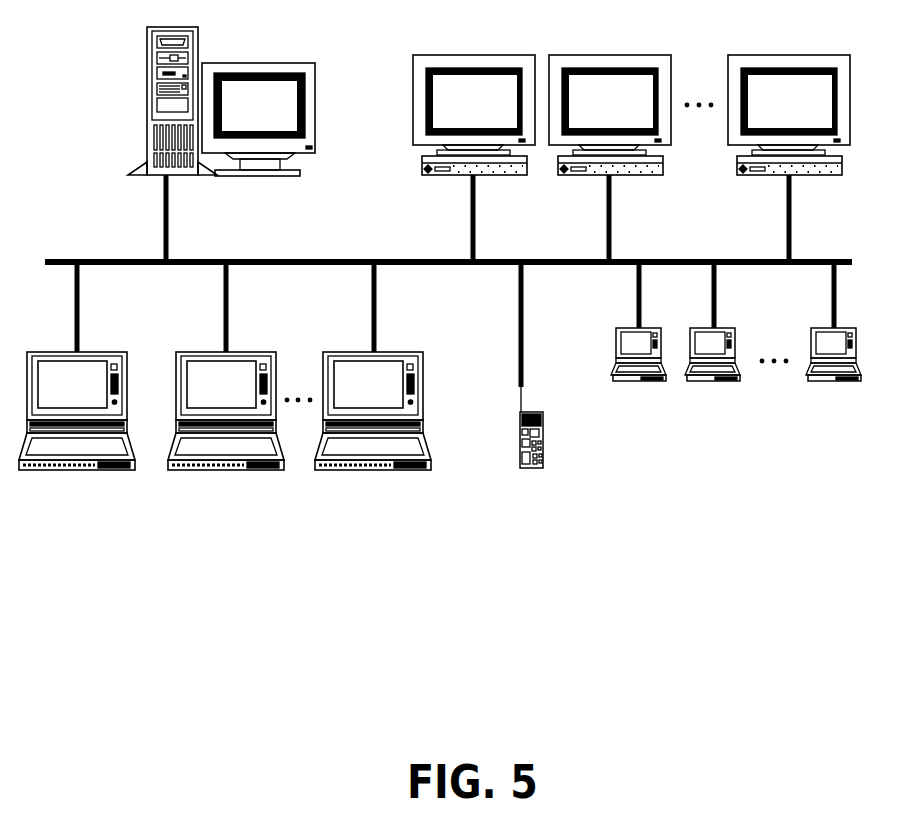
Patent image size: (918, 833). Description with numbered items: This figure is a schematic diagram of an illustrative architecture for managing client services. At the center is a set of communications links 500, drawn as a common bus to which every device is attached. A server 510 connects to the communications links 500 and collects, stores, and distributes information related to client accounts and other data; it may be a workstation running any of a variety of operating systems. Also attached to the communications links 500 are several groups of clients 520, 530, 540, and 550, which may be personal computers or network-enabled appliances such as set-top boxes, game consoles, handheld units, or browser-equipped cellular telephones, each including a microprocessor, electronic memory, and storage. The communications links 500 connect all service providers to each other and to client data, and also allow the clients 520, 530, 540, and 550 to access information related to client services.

The communications links 500 is at (448, 247).
The server 510 is at (221, 144).
The client 520 is at (631, 144).
The client 530 is at (225, 383).
The client 540 is at (537, 383).
The client 550 is at (736, 335).